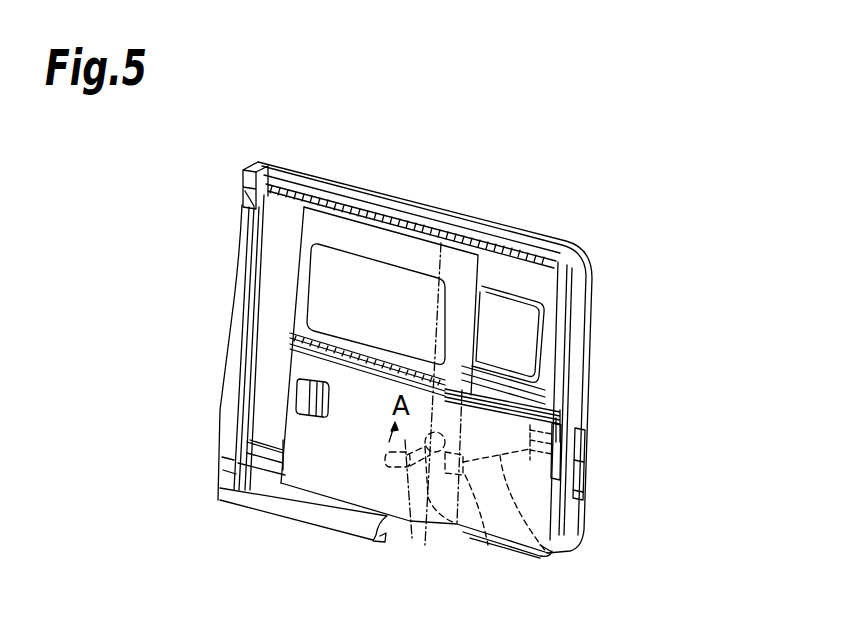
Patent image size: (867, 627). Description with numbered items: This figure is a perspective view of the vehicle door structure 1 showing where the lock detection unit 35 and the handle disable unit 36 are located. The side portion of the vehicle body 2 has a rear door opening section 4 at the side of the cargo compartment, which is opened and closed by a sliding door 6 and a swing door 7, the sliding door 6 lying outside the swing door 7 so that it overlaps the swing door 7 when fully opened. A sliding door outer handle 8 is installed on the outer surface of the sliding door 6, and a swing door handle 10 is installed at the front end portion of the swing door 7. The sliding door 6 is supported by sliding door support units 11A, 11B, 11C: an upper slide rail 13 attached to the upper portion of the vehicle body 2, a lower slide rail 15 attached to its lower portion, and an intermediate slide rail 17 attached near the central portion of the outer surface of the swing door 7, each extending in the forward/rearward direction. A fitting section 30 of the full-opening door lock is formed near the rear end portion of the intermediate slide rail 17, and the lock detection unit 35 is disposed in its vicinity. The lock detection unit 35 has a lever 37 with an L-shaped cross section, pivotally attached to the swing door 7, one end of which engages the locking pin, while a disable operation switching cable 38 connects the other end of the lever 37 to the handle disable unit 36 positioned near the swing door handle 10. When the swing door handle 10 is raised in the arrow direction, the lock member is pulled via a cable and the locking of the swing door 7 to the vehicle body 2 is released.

The vehicle door structure 1 is at (521, 246).
The vehicle body 2 is at (480, 233).
The rear door opening section 4 is at (277, 267).
The sliding door 6 is at (423, 255).
The swing door 7 is at (553, 287).
The sliding door outer handle 8 is at (332, 402).
The swing door handle 10 is at (466, 478).
The sliding door support unit 11A is at (313, 197).
The sliding door support unit 11B is at (294, 483).
The sliding door support unit 11C is at (562, 406).
The upper slide rail 13 is at (290, 207).
The lower slide rail 15 is at (262, 455).
The intermediate slide rail 17 is at (550, 410).
The fitting section 30 is at (584, 440).
The lock detection unit 35 is at (582, 505).
The handle disable unit 36 is at (505, 558).
The lever 37 is at (585, 468).
The disable operation switching cable 38 is at (550, 555).